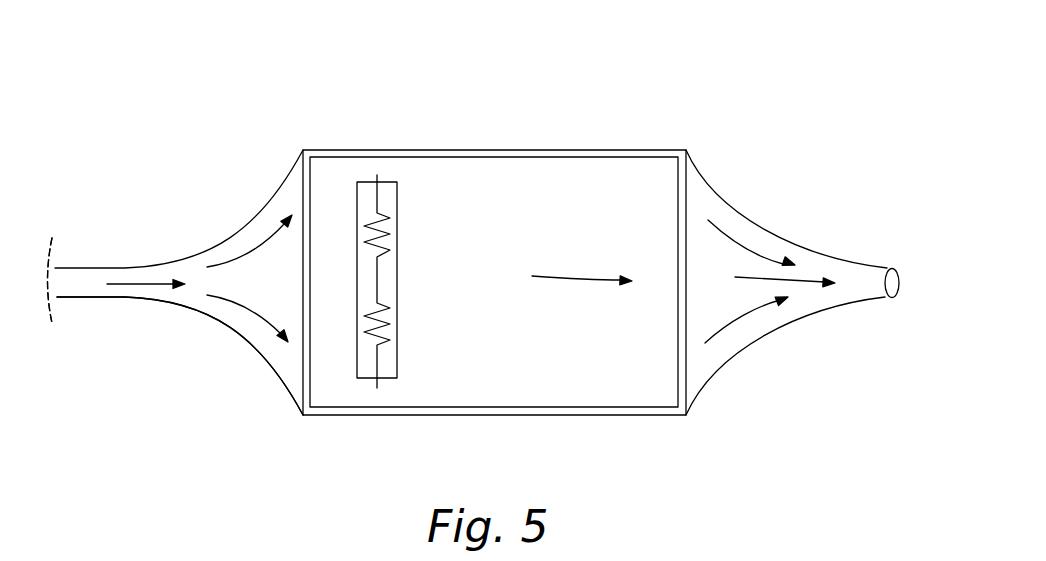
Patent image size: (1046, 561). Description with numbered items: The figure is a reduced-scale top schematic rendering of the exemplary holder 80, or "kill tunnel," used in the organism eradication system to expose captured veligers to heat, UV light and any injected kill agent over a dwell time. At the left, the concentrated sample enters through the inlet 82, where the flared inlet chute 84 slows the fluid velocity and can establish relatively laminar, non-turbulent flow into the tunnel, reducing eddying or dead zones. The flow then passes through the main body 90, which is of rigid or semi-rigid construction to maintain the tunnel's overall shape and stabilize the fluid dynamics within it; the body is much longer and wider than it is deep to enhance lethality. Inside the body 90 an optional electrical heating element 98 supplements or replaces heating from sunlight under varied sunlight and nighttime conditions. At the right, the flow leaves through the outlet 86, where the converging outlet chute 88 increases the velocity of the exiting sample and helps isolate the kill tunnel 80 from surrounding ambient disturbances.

The holder 80 is at (350, 95).
The inlet 82 is at (133, 232).
The inlet chute 84 is at (222, 320).
The outlet 86 is at (865, 230).
The outlet chute 88 is at (743, 218).
The main body 90 is at (595, 118).
The electrical heating element 98 is at (395, 207).